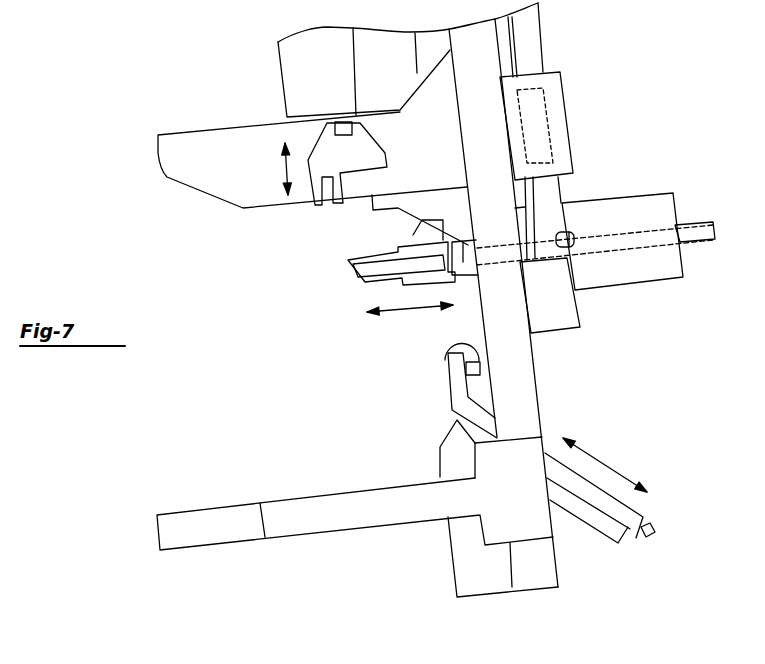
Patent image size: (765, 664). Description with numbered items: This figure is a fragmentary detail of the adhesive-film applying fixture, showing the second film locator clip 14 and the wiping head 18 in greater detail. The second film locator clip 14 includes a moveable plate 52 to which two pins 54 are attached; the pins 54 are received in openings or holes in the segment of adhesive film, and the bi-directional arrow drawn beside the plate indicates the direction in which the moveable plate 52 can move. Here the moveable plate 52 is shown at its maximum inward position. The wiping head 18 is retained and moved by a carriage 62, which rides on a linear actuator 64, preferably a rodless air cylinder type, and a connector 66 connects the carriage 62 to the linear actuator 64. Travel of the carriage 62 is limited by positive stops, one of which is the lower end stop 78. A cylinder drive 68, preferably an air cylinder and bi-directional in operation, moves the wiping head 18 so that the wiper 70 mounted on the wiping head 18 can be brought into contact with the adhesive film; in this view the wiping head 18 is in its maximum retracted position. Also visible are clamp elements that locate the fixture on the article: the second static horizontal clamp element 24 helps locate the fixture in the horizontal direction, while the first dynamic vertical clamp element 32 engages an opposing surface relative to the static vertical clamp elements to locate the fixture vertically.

The second film locator clip 14 is at (588, 511).
The wiping head 18 is at (464, 266).
The second static horizontal clamp element 24 is at (231, 517).
The first dynamic vertical clamp element 32 is at (328, 153).
The moveable plate 52 is at (625, 517).
The pins 54 is at (446, 362).
The carriage 62 is at (422, 203).
The linear actuator 64 is at (533, 45).
The connector 66 is at (557, 141).
The cylinder drive 68 is at (646, 216).
The wiper 70 is at (365, 270).
The lower end stop 78 is at (557, 315).